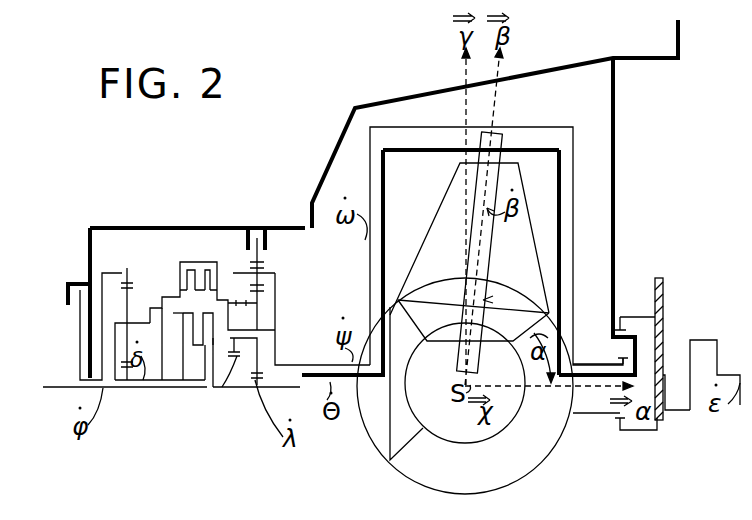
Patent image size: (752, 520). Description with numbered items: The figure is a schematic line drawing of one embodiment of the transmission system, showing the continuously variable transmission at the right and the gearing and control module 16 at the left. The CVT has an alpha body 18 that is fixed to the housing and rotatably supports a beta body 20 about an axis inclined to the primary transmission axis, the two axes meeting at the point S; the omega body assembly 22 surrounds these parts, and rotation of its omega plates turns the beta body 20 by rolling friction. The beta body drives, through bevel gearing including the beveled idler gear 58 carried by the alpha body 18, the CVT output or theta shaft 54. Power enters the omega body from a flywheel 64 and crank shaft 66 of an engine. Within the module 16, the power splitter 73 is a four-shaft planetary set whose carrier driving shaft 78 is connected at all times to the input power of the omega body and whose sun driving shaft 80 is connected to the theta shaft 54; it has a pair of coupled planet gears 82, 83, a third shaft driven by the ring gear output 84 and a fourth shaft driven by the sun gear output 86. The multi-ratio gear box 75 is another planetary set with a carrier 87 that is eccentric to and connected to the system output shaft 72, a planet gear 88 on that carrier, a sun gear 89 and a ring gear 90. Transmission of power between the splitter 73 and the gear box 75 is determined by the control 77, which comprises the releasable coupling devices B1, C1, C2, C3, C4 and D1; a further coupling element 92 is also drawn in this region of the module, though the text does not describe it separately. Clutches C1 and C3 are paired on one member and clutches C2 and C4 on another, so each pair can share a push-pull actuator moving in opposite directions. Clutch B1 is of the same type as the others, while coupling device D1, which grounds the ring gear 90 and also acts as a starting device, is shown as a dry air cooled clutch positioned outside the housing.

The gearing and control module 16 is at (214, 224).
The alpha body 18 is at (560, 222).
The beta body 20 is at (532, 262).
The omega body assembly 22 is at (545, 127).
The theta shaft 54 is at (374, 384).
The beveled idler gear 58 is at (522, 474).
The flywheel 64 is at (657, 278).
The crank shaft 66 is at (690, 338).
The system output shaft 72 is at (68, 385).
The power splitter 73 is at (282, 307).
The multi-ratio gear box 75 is at (130, 265).
The control 77 is at (193, 360).
The carrier driving shaft 78 is at (289, 362).
The sun driving shaft 80 is at (255, 388).
The planet gear 82 is at (271, 348).
The planet gear 83 is at (250, 360).
The ring gear output 84 is at (236, 303).
The sun gear output 86 is at (232, 382).
The carrier 87 is at (118, 312).
The planet gear 88 is at (135, 282).
The sun gear 89 is at (125, 370).
The ring gear 90 is at (127, 282).
The clutch 92 is at (258, 266).
The clutch B1 is at (256, 227).
The coupling device D1 is at (85, 282).
The clutch C1 is at (207, 262).
The clutch C2 is at (185, 322).
The clutch C3 is at (188, 262).
The clutch C4 is at (248, 276).